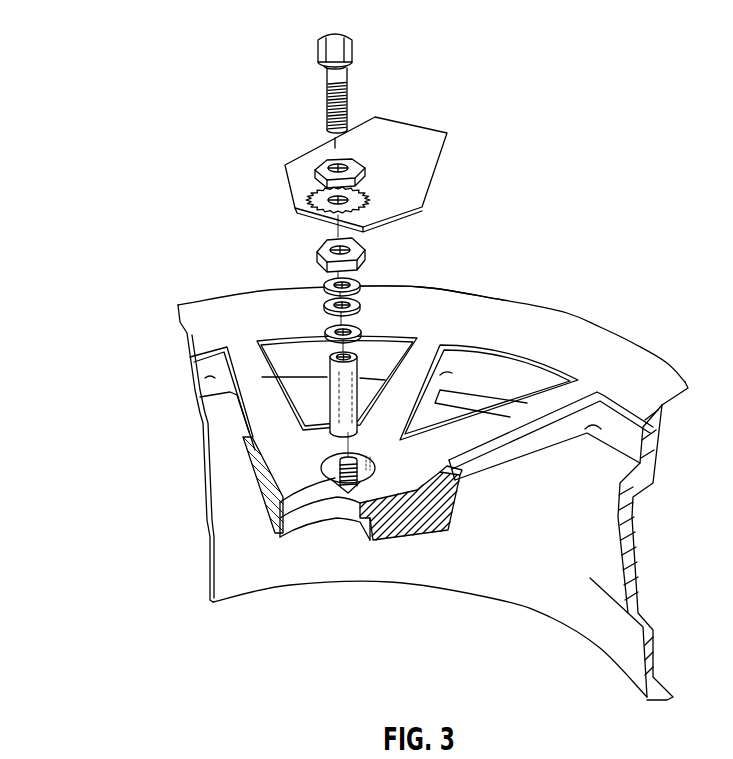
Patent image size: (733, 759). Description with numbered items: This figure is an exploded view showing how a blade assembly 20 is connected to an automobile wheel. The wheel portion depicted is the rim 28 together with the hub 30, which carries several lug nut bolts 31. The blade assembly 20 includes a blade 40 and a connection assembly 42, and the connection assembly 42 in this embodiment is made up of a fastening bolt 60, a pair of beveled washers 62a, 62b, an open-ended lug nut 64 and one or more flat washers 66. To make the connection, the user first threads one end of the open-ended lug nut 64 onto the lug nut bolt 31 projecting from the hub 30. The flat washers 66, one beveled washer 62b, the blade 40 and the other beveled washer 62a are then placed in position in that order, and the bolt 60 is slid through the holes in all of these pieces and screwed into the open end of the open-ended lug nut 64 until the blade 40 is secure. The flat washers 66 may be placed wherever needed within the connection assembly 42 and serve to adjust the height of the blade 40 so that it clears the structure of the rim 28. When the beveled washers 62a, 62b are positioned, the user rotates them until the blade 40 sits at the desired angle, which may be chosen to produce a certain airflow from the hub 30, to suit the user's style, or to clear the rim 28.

The blade assembly 20 is at (143, 480).
The rim 28 is at (570, 337).
The hub 30 is at (390, 470).
The lug nut bolt 31 is at (280, 512).
The blade 40 is at (425, 142).
The connection assembly 42 is at (410, 309).
The fastening bolt 60 is at (320, 48).
The beveled washer 62a is at (323, 172).
The beveled washer 62b is at (318, 256).
The open-ended lug nut 64 is at (333, 393).
The flat washer 66 is at (323, 333).